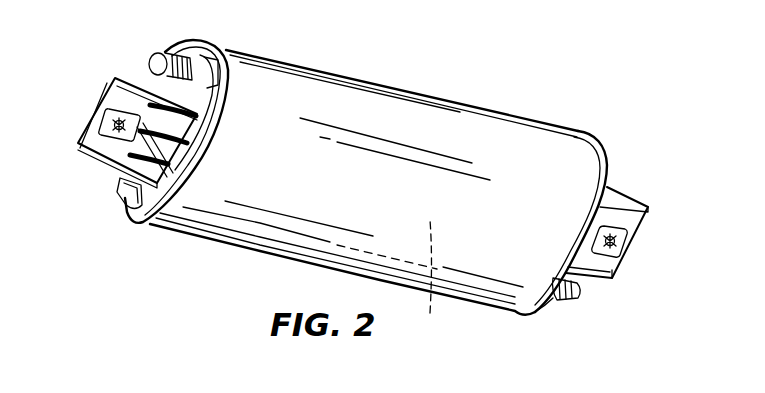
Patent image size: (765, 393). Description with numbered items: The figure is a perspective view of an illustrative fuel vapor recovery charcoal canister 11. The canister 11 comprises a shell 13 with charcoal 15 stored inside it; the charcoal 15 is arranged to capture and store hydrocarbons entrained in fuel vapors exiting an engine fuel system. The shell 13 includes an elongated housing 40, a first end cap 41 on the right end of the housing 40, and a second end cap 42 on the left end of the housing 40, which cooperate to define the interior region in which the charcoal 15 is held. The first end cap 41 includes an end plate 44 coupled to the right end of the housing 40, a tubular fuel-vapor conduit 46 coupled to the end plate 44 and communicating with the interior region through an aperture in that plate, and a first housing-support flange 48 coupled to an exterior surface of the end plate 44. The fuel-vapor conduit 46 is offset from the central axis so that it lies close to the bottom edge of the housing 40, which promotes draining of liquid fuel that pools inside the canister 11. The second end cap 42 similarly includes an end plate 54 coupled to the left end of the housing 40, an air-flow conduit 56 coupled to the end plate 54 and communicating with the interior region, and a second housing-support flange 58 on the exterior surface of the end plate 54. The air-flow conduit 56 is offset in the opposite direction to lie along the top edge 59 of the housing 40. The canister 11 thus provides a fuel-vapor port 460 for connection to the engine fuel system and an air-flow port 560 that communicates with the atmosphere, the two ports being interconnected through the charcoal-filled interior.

The charcoal canister 11 is at (470, 97).
The shell 13 is at (347, 72).
The charcoal 15 is at (428, 213).
The housing 40 is at (483, 148).
The first end cap 41 is at (625, 183).
The second end cap 42 is at (107, 190).
The end plate 44 is at (607, 152).
The tubular fuel-vapor conduit 46 is at (566, 302).
The first housing-support flange 48 is at (628, 272).
The end plate 54 is at (148, 205).
The air-flow conduit 56 is at (167, 60).
The second housing-support flange 58 is at (93, 100).
The top edge 59 is at (250, 62).
The fuel-vapor port 460 is at (555, 305).
The air-flow port 560 is at (200, 47).